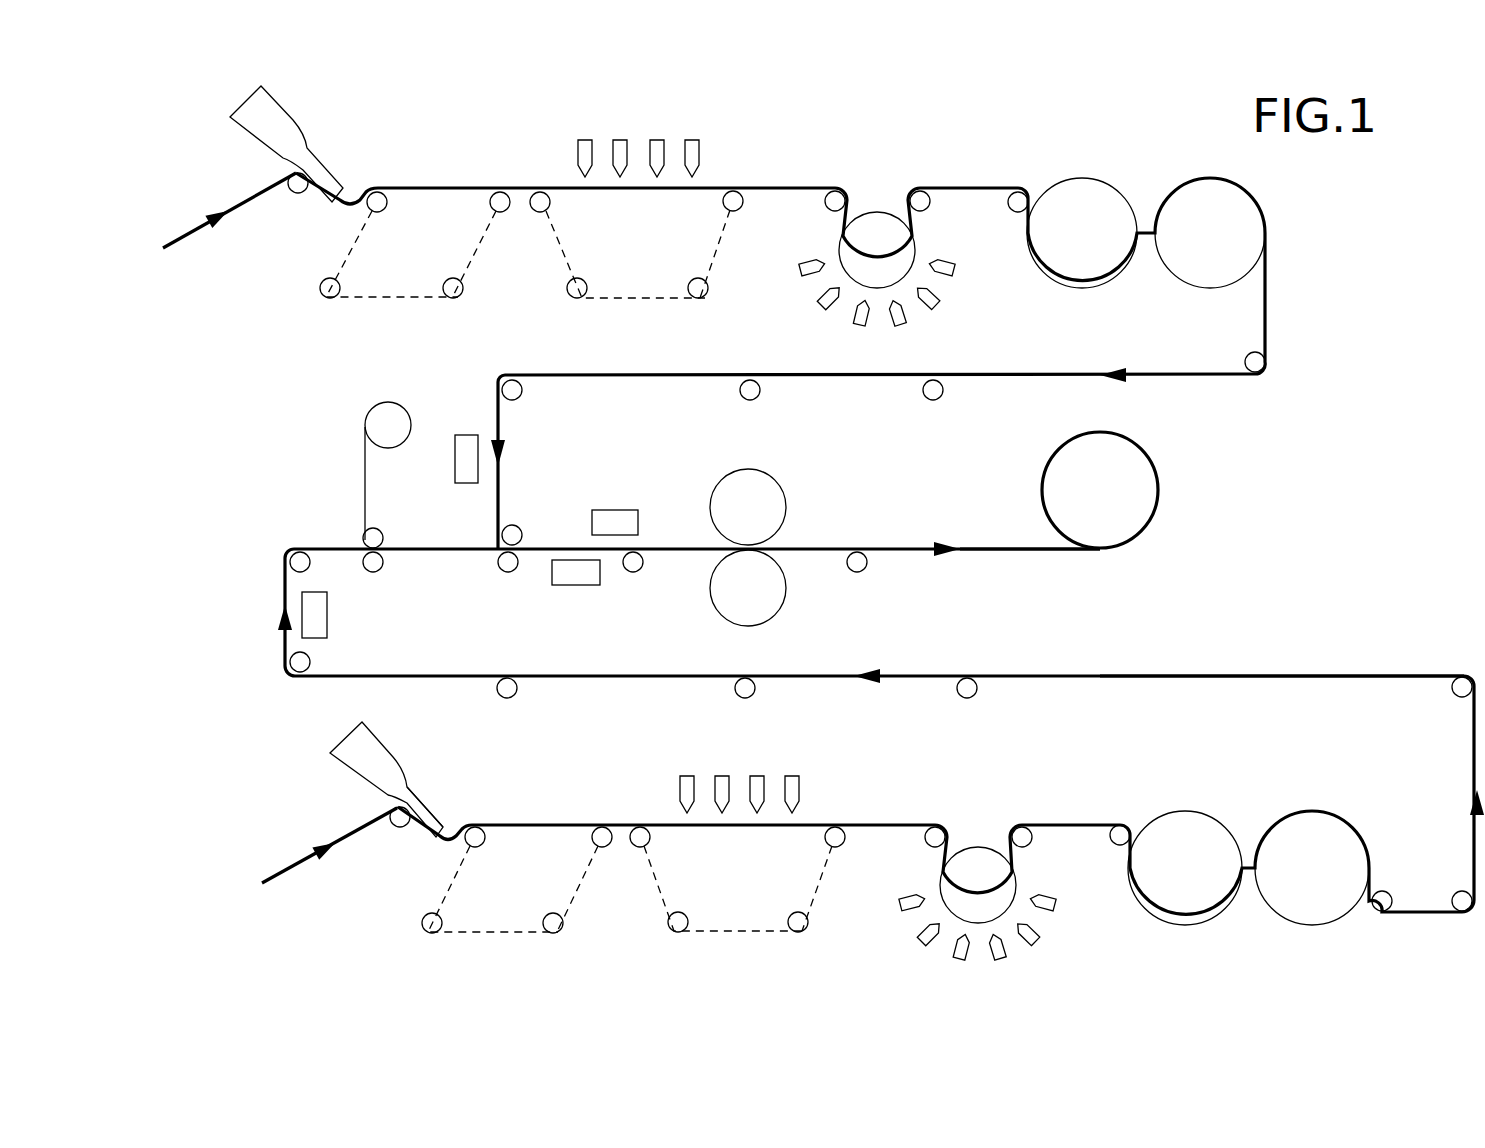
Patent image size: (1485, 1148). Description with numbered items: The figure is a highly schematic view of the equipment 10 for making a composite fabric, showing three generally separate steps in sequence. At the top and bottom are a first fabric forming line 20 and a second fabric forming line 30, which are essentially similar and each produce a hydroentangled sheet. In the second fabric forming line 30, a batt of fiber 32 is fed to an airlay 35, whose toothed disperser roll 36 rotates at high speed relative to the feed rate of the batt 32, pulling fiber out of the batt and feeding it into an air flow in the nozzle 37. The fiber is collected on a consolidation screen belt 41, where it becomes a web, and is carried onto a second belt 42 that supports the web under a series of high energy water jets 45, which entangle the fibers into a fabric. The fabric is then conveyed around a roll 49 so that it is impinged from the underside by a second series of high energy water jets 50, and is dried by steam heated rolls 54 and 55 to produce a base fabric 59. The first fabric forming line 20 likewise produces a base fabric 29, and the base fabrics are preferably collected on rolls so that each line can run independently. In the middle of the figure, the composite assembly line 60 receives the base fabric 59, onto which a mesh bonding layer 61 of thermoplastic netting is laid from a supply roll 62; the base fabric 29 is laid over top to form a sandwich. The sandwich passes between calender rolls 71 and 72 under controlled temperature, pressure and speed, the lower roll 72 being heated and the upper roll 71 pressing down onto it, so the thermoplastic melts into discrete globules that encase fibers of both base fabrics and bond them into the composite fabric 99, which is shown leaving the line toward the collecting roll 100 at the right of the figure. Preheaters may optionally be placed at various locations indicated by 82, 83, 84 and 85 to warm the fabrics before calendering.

The equipment 10 is at (992, 140).
The first fabric forming line 20 is at (1296, 258).
The base fabric 29 is at (1210, 378).
The second fabric forming line 30 is at (300, 818).
The batt of fiber 32 is at (272, 876).
The airlay 35 is at (414, 752).
The toothed disperser roll 36 is at (407, 828).
The nozzle 37 is at (398, 788).
The consolidation screen belt 41 is at (503, 933).
The second belt 42 is at (743, 933).
The high energy water jets 45 is at (792, 772).
The roll 49 is at (977, 853).
The second series of high energy water jets 50 is at (1003, 953).
The steam heated roll 54 is at (1177, 850).
The steam heated roll 55 is at (1312, 850).
The base fabric 59 is at (1310, 673).
The composite assembly line 60 is at (236, 612).
The mesh bonding layer 61 is at (367, 493).
The supply roll 62 is at (375, 427).
The calender roll 71 is at (763, 497).
The calender roll 72 is at (767, 602).
The preheater 82 is at (467, 430).
The preheater 83 is at (603, 508).
The preheater 84 is at (570, 588).
The preheater 85 is at (320, 610).
The composite fabric 99 is at (997, 550).
The windup roll 100 is at (1130, 505).